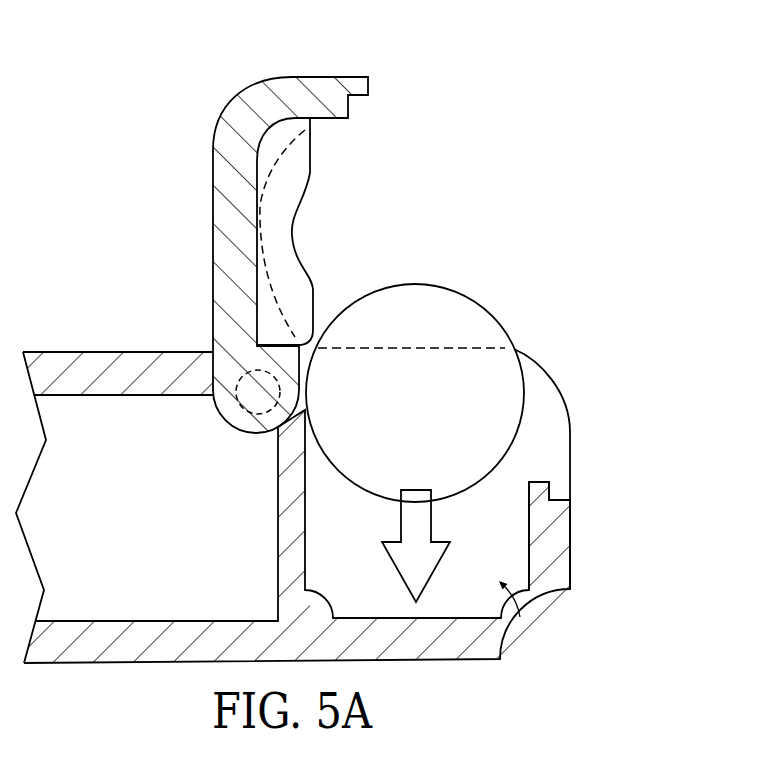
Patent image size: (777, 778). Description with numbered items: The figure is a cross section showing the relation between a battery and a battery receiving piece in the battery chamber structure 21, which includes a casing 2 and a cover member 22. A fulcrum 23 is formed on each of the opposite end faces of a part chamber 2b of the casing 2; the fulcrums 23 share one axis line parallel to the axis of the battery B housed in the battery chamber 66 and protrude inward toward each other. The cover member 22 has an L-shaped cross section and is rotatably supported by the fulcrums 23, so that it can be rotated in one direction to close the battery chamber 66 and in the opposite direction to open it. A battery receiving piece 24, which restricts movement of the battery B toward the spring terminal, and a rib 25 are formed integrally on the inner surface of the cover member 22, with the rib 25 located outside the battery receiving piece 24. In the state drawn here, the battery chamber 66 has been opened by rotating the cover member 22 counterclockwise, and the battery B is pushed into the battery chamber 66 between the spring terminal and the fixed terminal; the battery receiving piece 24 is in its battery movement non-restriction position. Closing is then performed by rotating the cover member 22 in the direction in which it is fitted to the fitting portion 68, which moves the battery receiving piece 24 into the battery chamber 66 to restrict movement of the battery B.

The casing 2 is at (338, 492).
The part chamber 2b is at (120, 415).
The battery chamber structure 21 is at (292, 258).
The cover member 22 is at (186, 166).
The fulcrum 23 is at (253, 393).
The battery receiving piece 24 is at (310, 170).
The rib 25 is at (289, 128).
The battery chamber 66 is at (542, 638).
The fitting portion 68 is at (531, 483).
The battery B is at (470, 405).